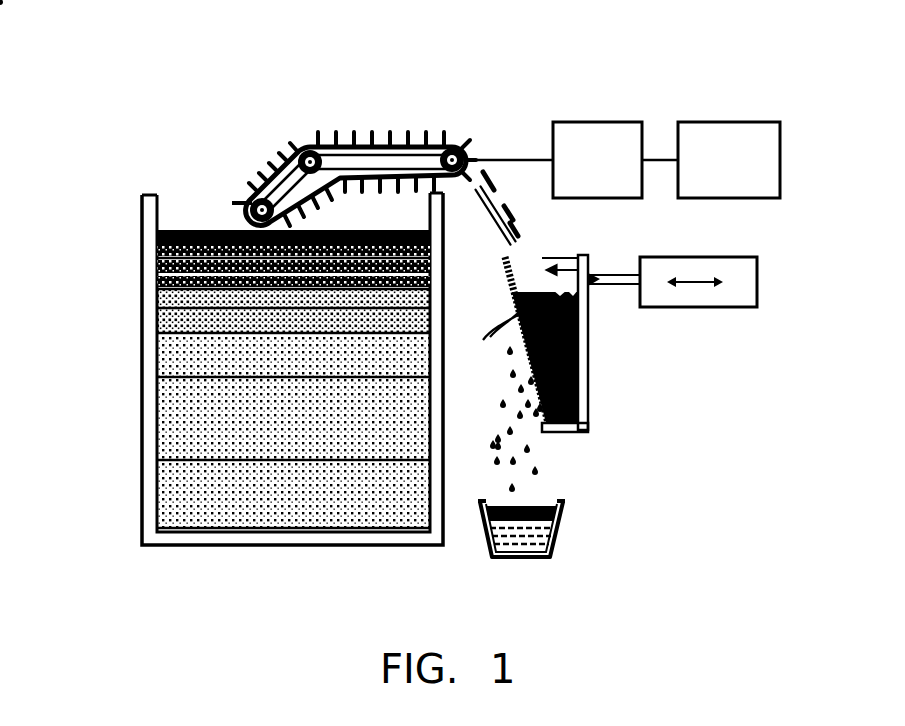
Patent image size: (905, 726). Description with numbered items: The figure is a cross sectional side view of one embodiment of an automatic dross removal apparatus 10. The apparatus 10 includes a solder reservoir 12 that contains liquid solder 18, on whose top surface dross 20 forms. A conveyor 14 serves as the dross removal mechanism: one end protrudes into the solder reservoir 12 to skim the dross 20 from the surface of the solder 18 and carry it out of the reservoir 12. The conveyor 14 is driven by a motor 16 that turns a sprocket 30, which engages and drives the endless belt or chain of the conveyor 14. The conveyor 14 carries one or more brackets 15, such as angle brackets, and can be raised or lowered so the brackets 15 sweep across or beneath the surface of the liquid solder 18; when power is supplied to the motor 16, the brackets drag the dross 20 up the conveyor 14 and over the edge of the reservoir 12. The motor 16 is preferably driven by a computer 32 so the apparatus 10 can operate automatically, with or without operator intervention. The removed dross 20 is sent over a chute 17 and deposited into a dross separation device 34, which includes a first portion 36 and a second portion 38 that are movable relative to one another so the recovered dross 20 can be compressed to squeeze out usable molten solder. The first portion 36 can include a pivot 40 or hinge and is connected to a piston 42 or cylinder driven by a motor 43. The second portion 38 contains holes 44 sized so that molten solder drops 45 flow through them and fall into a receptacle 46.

The automatic dross removal apparatus 10 is at (180, 148).
The solder reservoir 12 is at (145, 327).
The conveyor 14 is at (379, 133).
The bracket 15 is at (437, 138).
The motor 16 is at (606, 122).
The chute 17 is at (498, 233).
The liquid solder 18 is at (173, 372).
The dross 20 is at (328, 130).
The sprocket 30 is at (303, 143).
The computer 32 is at (722, 122).
The dross separation device 34 is at (608, 347).
The first portion 36 is at (588, 365).
The second portion 38 is at (511, 292).
The pivot 40 is at (588, 428).
The piston 42 is at (608, 258).
The motor 43 is at (703, 308).
The holes 44 is at (495, 339).
The molten solder drops 45 is at (530, 448).
The receptacle 46 is at (562, 530).